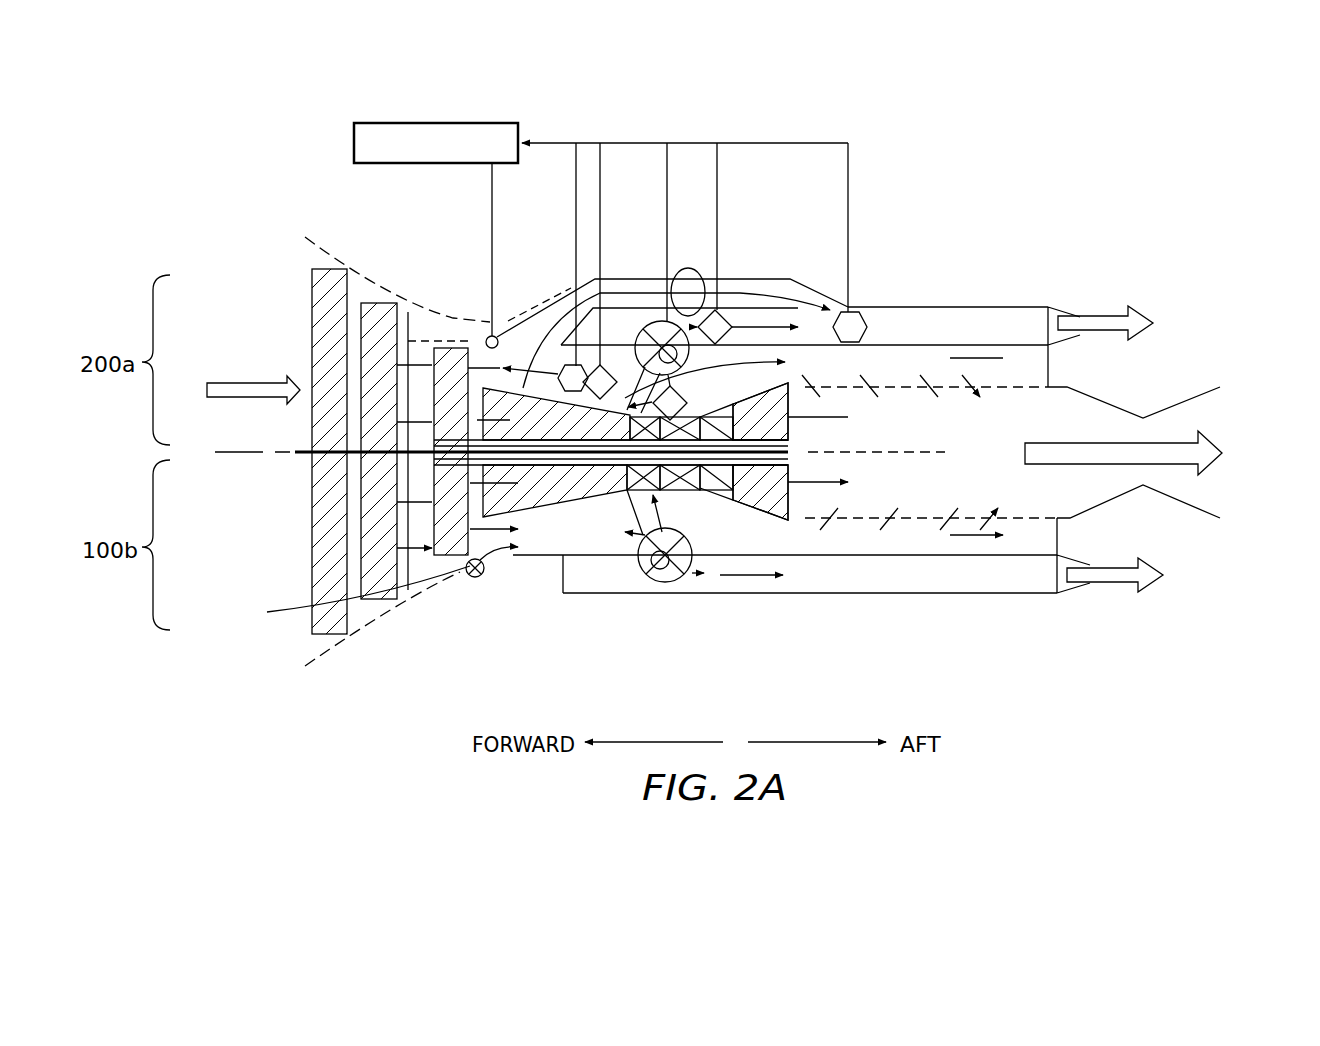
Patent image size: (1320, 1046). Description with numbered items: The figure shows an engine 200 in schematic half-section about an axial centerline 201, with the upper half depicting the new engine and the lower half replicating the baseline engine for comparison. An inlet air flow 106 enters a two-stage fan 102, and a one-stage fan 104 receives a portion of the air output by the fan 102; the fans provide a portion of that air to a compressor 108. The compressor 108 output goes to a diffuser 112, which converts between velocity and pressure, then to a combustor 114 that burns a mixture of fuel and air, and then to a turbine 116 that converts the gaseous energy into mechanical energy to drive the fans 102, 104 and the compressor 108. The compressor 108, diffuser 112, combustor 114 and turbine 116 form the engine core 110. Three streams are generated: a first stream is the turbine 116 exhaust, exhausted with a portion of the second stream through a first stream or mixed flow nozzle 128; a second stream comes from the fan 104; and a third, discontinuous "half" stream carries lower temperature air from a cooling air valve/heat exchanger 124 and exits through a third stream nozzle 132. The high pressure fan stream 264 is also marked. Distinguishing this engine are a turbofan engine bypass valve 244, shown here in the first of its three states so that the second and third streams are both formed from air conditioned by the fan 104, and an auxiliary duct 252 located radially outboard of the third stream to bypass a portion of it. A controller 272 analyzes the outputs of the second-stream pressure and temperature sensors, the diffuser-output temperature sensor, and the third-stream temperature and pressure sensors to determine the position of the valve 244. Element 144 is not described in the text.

The two-stage fan 102 is at (335, 622).
The one-stage fan 104 is at (450, 535).
The inlet air flow 106 is at (250, 385).
The compressor 108 is at (577, 492).
The engine core 110 is at (545, 525).
The diffuser 112 is at (635, 493).
The combustor 114 is at (733, 307).
The turbine 116 is at (752, 495).
The cooling air valve/heat exchanger 124 is at (657, 321).
The first stream nozzle or mixed flow nozzle 128 is at (1240, 450).
The third stream nozzle 132 is at (1110, 320).
The variable inlet guide vane 144 is at (474, 578).
The engine 200 is at (1192, 210).
The axial centerline 201 is at (262, 455).
The valve 244 is at (497, 333).
The auxiliary duct 252 is at (697, 270).
The high pressure fan stream 264 is at (480, 345).
The controller 272 is at (354, 141).